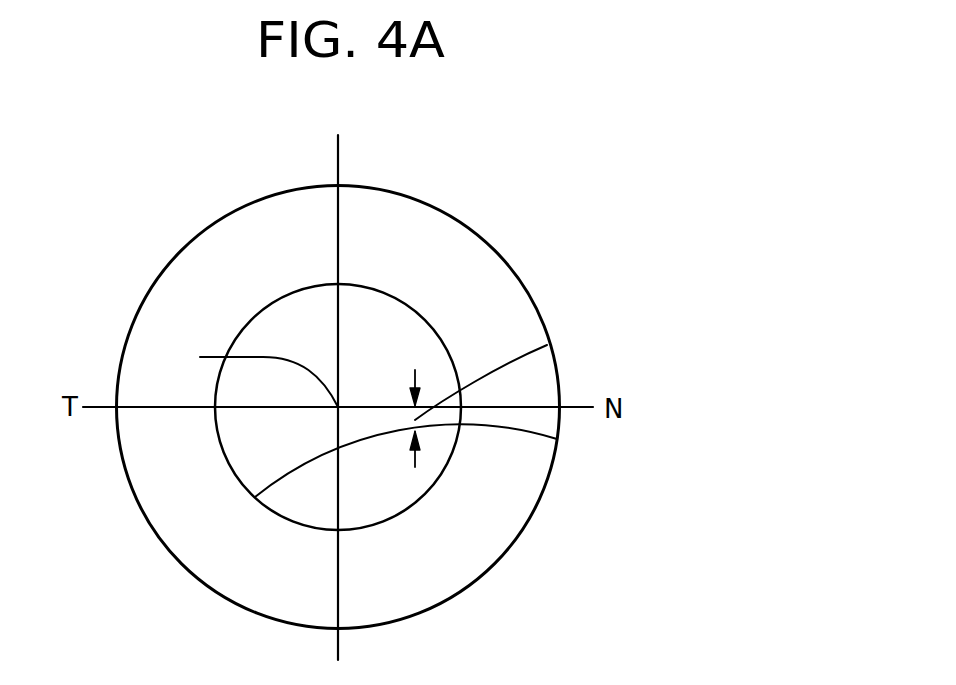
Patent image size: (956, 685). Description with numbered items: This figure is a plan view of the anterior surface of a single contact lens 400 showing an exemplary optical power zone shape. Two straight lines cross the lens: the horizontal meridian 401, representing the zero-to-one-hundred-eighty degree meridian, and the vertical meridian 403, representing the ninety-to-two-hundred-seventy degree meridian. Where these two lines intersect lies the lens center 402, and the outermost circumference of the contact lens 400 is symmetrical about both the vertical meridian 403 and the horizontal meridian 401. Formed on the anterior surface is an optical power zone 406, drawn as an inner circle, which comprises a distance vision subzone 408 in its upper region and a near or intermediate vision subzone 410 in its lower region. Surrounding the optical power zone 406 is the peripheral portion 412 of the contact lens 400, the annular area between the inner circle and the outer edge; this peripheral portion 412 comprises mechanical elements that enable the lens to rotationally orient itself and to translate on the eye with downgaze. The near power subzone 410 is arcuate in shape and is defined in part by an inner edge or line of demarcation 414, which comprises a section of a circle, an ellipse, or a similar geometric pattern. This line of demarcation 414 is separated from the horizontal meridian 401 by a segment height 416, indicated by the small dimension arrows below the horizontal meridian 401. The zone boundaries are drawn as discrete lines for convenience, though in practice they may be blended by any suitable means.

The contact lens 400 is at (485, 240).
The horizontal meridian 401 is at (570, 405).
The lens center 402 is at (200, 357).
The vertical meridian 403 is at (338, 161).
The optical power zone 406 is at (430, 492).
The distance vision subzone 408 is at (393, 340).
The near or intermediate vision subzone 410 is at (377, 495).
The peripheral portion 412 is at (503, 460).
The line of demarcation 414 is at (557, 440).
The segment height 416 is at (547, 345).